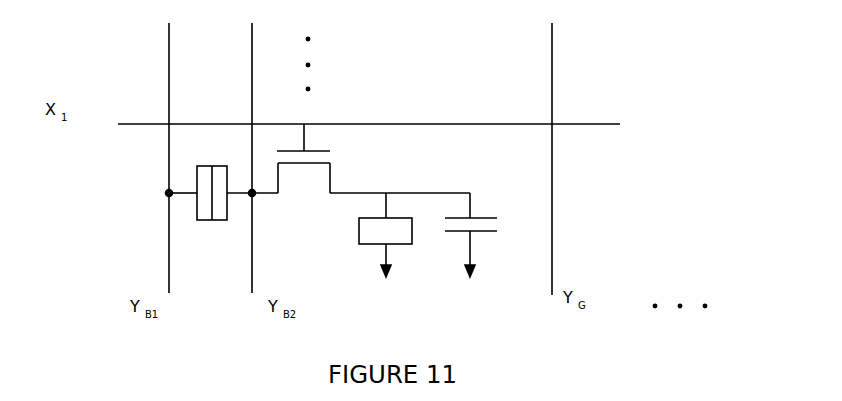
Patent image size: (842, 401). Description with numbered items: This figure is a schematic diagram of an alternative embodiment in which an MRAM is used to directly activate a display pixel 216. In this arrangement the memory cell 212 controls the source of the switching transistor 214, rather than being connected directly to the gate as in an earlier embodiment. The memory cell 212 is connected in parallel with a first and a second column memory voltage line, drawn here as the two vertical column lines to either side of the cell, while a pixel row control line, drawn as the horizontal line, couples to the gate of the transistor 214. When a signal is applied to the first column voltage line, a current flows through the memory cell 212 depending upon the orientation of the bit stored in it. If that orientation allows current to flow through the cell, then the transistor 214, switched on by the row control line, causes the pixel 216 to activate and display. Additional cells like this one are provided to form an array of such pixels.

The memory cell 212 is at (146, 193).
The switching transistor 214 is at (352, 135).
The directly activated display pixel 216 is at (430, 270).